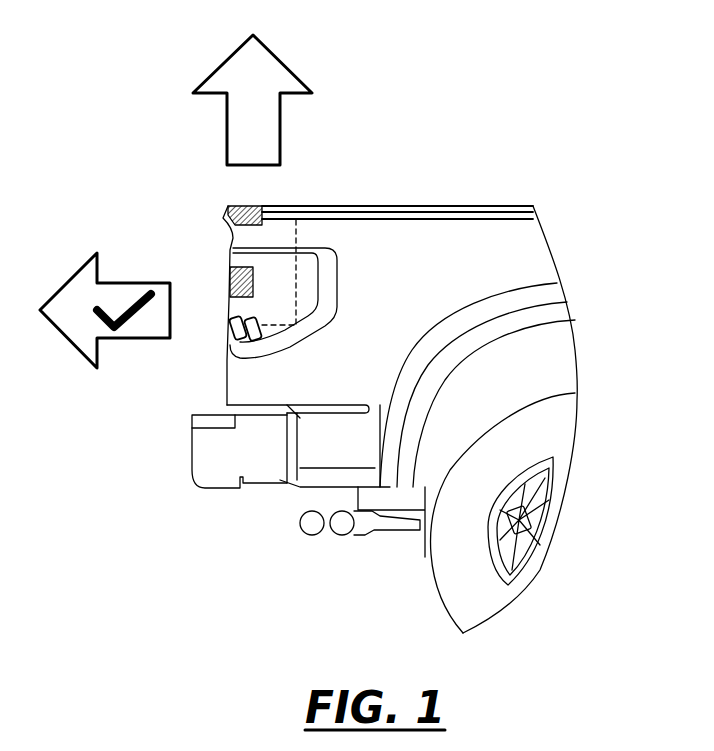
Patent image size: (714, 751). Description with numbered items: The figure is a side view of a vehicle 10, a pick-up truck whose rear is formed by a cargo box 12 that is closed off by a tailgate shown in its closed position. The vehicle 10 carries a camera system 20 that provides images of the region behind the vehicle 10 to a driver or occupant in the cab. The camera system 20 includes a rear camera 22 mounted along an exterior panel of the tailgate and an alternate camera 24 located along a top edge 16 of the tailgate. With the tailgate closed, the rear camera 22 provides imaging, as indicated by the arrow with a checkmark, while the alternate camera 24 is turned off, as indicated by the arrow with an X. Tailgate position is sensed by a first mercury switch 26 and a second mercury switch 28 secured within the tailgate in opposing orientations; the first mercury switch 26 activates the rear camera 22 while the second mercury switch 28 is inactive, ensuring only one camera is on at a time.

The vehicle 10 is at (553, 162).
The cargo box 12 is at (425, 242).
The top edge 16 is at (267, 203).
The camera system 20 is at (122, 192).
The rear camera 22 is at (230, 277).
The alternate camera 24 is at (230, 208).
The first mercury switch 26 is at (230, 325).
The second mercury switch 28 is at (259, 333).